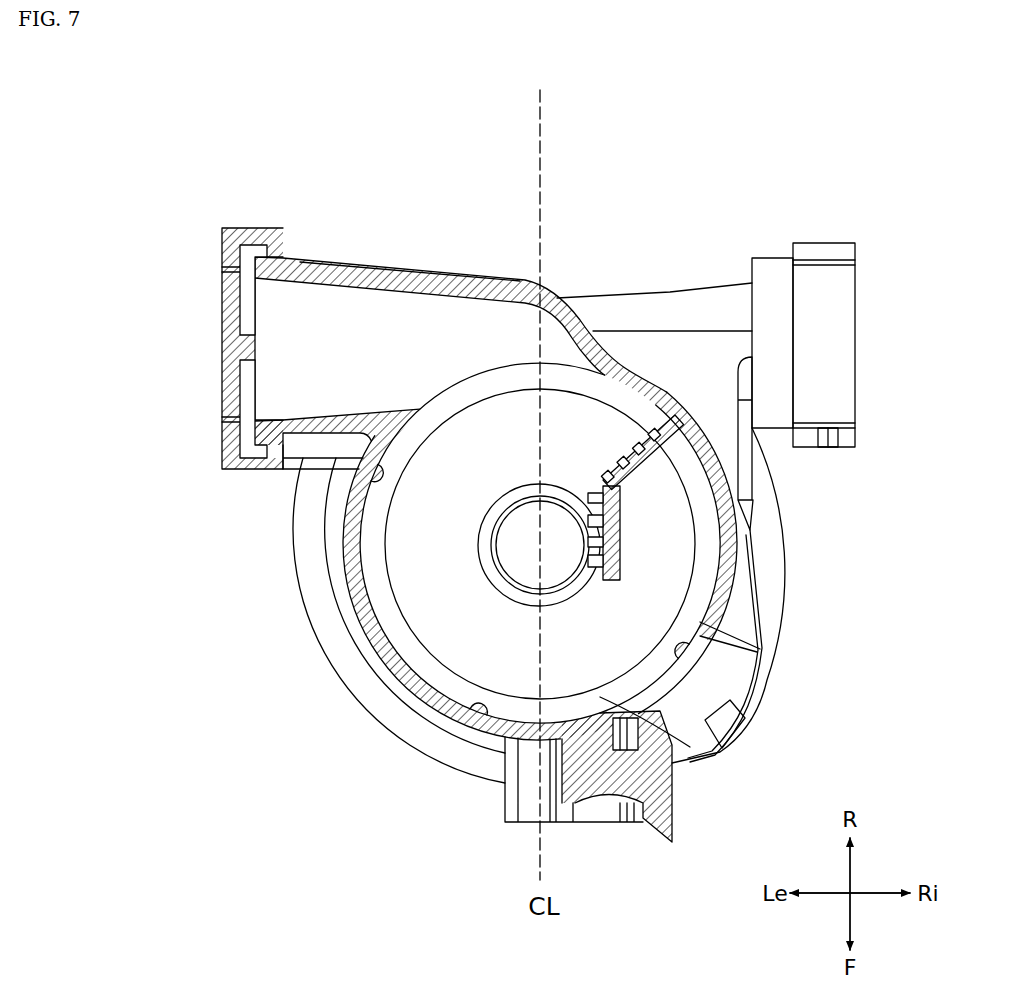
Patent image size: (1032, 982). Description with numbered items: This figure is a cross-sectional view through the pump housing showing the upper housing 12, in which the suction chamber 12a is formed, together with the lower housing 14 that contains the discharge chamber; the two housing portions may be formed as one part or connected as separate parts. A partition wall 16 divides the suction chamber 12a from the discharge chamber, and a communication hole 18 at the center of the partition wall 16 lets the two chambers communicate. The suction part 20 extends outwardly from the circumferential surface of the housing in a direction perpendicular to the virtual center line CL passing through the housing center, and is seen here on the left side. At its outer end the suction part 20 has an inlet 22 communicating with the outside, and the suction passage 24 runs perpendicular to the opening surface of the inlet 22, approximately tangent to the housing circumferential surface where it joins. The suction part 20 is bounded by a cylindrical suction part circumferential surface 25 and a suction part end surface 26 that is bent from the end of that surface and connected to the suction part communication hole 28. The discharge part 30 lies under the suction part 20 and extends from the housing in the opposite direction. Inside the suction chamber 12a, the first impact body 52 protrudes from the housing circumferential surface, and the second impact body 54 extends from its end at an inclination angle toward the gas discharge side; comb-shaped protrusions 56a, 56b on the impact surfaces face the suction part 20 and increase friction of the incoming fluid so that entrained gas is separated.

The upper housing 12 is at (740, 453).
The suction chamber 12a is at (610, 553).
The lower housing 14 is at (352, 568).
The partition wall 16 is at (433, 593).
The communication hole 18 is at (533, 552).
The suction part 20 is at (369, 266).
The inlet 22 is at (272, 352).
The suction passage 24 is at (417, 327).
The suction part circumferential surface 25 is at (458, 271).
The suction part end surface 26 is at (590, 311).
The suction part communication hole 28 is at (503, 385).
The discharge part 30 is at (717, 303).
The first impact body 52 is at (660, 530).
The second impact body 54 is at (622, 558).
The protrusion 56a is at (637, 427).
The protrusion 56b is at (706, 660).